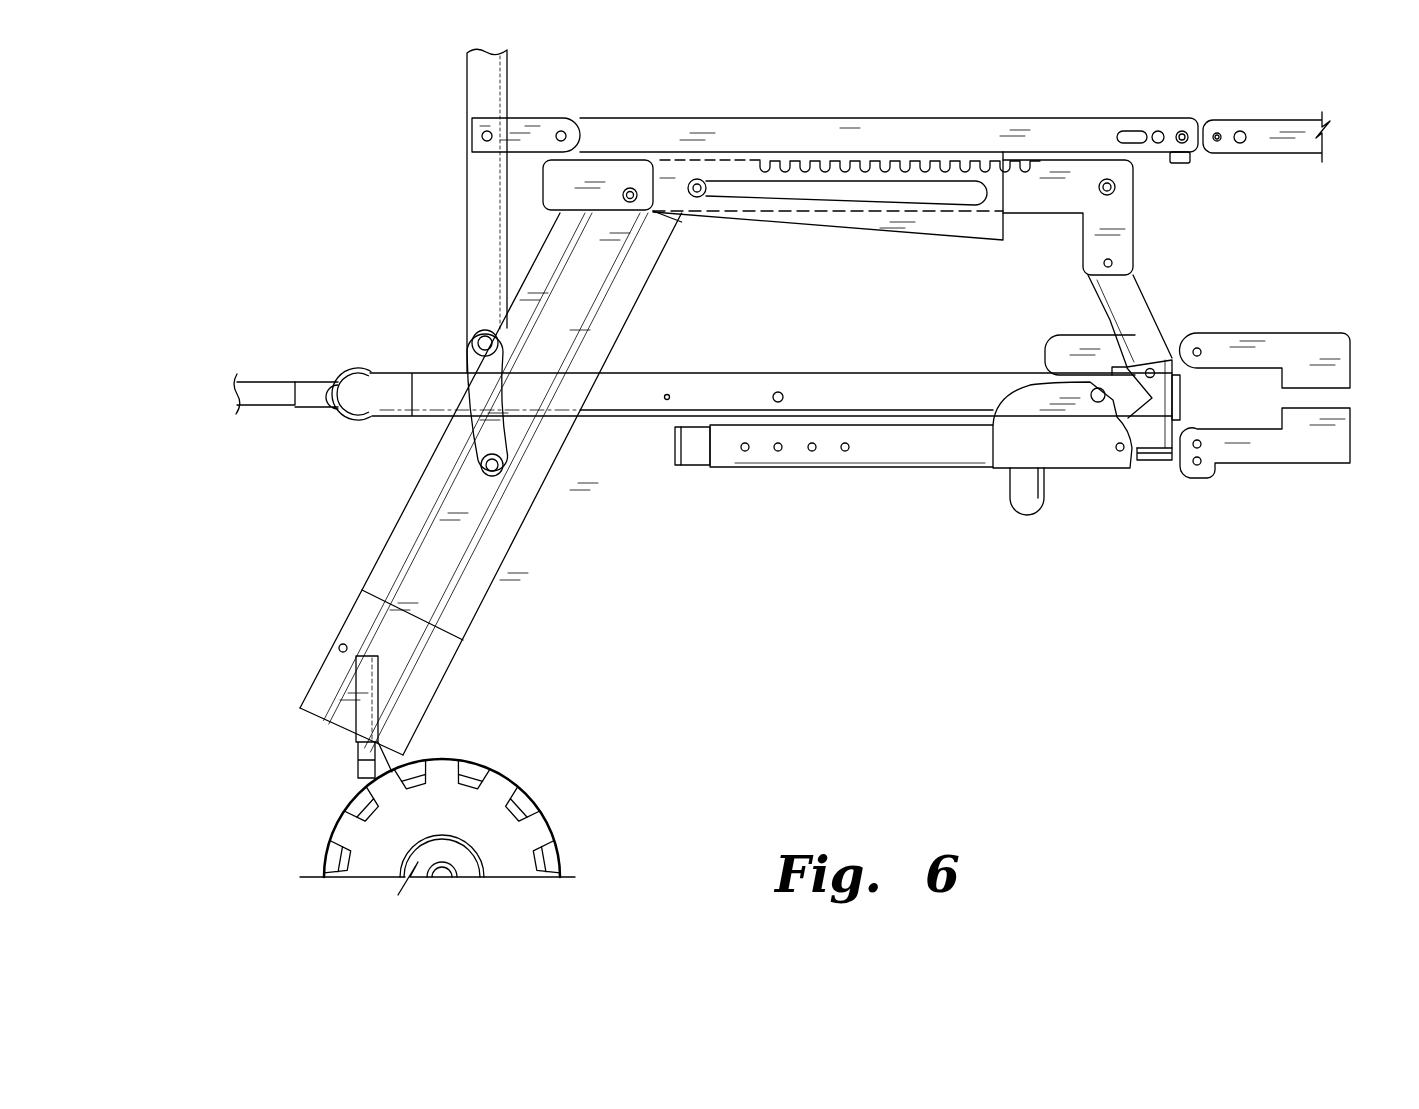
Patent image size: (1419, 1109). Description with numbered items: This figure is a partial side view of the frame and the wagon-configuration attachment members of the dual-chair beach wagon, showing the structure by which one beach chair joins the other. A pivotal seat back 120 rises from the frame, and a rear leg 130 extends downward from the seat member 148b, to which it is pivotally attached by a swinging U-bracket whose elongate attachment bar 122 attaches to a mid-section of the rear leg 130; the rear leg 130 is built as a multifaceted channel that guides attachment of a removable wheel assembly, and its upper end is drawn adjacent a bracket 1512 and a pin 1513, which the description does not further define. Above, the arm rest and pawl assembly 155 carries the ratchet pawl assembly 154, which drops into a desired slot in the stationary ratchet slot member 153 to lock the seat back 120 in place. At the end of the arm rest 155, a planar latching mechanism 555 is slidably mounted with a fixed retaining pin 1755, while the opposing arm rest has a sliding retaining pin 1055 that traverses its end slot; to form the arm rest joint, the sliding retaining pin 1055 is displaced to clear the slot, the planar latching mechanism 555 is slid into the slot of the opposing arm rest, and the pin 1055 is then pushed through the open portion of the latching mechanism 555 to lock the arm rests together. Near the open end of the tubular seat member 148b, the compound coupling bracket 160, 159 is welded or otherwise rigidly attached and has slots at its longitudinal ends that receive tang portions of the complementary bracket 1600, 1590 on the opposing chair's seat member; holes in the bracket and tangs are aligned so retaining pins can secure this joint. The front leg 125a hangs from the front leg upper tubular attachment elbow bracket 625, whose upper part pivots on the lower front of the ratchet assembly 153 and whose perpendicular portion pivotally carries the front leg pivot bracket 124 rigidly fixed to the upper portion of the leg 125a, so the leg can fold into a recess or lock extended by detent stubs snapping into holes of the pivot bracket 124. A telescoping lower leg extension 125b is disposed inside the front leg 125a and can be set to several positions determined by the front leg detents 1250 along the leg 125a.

The seat back 120 is at (467, 200).
The elongate attachment bar 122 is at (478, 435).
The front leg pivot bracket 124 is at (1063, 465).
The front leg 125a is at (907, 469).
The telescoping lower leg extension 125b is at (672, 467).
The front leg detents 1250 is at (845, 452).
The rear leg 130 is at (541, 243).
The seat member 148b is at (755, 374).
The stationary ratchet slot member 153 is at (1041, 205).
The ratchet pawl assembly 154 is at (948, 236).
The arm rest and pawl assembly 155 is at (840, 130).
The mounting bracket 1512 is at (522, 122).
The pivot pin 1513 is at (632, 202).
The fixed retaining pin 1755 is at (1180, 131).
The planar latching mechanism 555 is at (1195, 115).
The sliding retaining pin 1055 is at (1219, 142).
The front leg upper tubular attachment elbow bracket 625 is at (1150, 300).
The complementary bracket 1600 is at (1045, 348).
The complementary bracket 1590 is at (1153, 462).
The compound coupling bracket 160 is at (1320, 333).
The compound coupling bracket 159 is at (1292, 464).